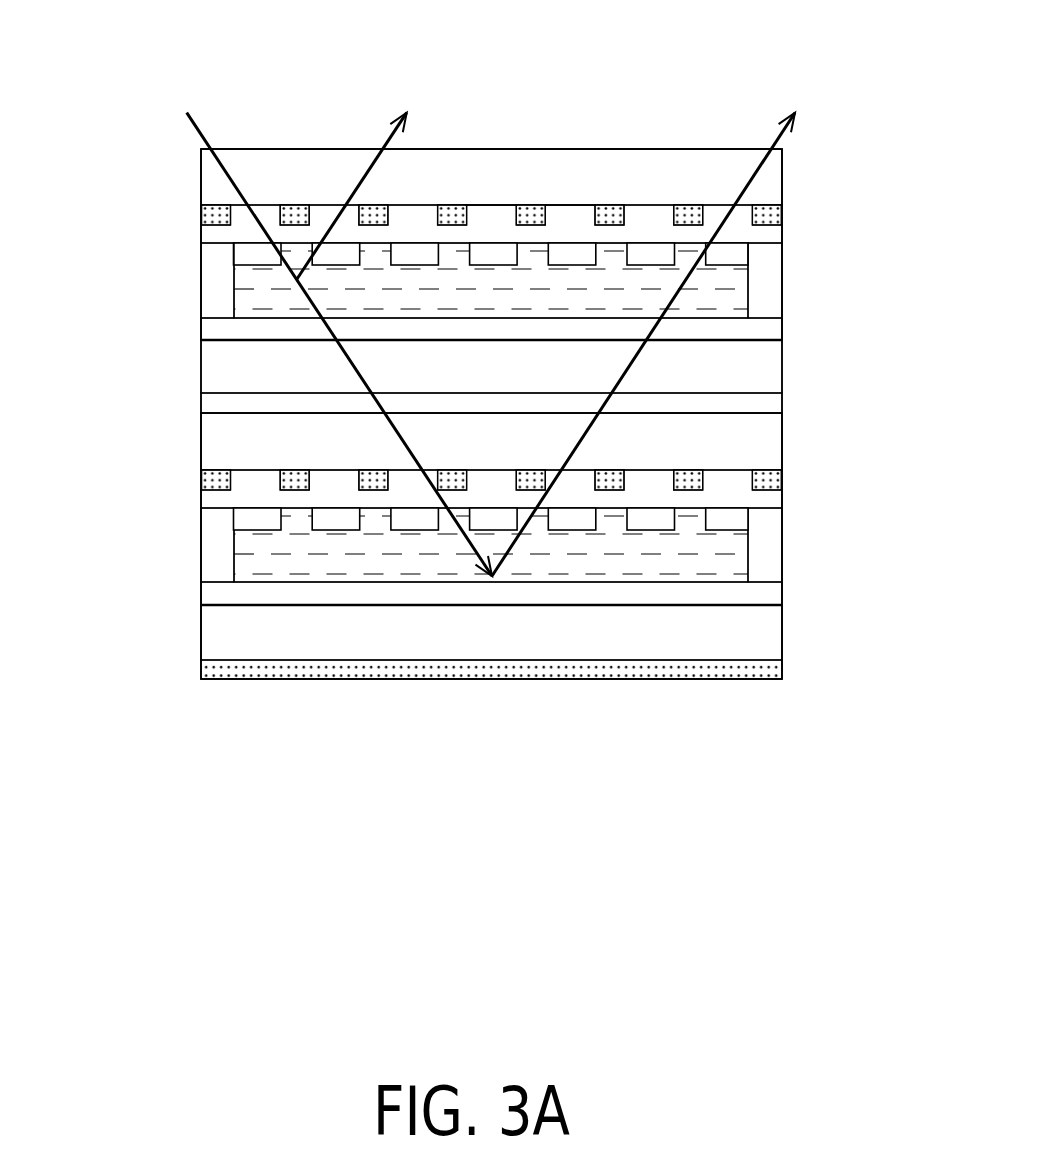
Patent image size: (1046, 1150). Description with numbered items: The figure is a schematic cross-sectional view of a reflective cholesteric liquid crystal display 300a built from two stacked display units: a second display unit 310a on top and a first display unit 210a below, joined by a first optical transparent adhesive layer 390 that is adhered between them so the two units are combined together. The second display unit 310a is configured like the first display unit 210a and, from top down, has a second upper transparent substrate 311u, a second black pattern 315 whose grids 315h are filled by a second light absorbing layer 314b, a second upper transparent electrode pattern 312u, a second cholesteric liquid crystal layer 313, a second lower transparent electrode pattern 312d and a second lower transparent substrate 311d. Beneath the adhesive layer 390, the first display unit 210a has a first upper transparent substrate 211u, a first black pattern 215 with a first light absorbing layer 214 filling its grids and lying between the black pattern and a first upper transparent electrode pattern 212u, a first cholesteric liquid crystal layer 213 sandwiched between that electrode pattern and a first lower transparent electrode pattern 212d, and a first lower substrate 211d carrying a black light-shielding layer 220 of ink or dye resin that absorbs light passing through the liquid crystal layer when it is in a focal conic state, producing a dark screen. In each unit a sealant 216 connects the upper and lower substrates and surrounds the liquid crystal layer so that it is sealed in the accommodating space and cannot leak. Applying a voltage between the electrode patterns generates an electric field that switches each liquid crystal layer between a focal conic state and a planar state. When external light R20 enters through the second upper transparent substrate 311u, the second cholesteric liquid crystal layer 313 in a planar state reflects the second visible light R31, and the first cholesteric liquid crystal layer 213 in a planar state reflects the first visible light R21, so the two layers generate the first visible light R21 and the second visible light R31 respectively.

The reflective cholesteric liquid crystal display 300a is at (165, 35).
The second display unit 310a is at (135, 263).
The first display unit 210a is at (135, 527).
The second upper transparent substrate 311u is at (770, 173).
The second light absorbing layer 314b is at (772, 235).
The second black pattern 315 is at (201, 218).
The grids 315h is at (572, 202).
The second cholesteric liquid crystal layer 313 is at (727, 297).
The second upper transparent electrode pattern 312u is at (737, 253).
The sealant 216 is at (210, 279).
The second lower transparent electrode pattern 312d is at (763, 330).
The second lower transparent substrate 311d is at (763, 370).
The first optical transparent adhesive layer 390 is at (213, 405).
The first upper transparent substrate 211u is at (772, 437).
The first light absorbing layer 214 is at (772, 498).
The first black pattern 215 is at (201, 478).
The first upper transparent electrode pattern 212u is at (738, 517).
The first cholesteric liquid crystal layer 213 is at (727, 560).
The first lower transparent electrode pattern 212d is at (763, 593).
The first lower substrate 211d is at (763, 633).
The black light-shielding layer 220 is at (201, 668).
The external light R20 is at (208, 140).
The first visible light R21 is at (773, 138).
The second visible light R31 is at (385, 138).